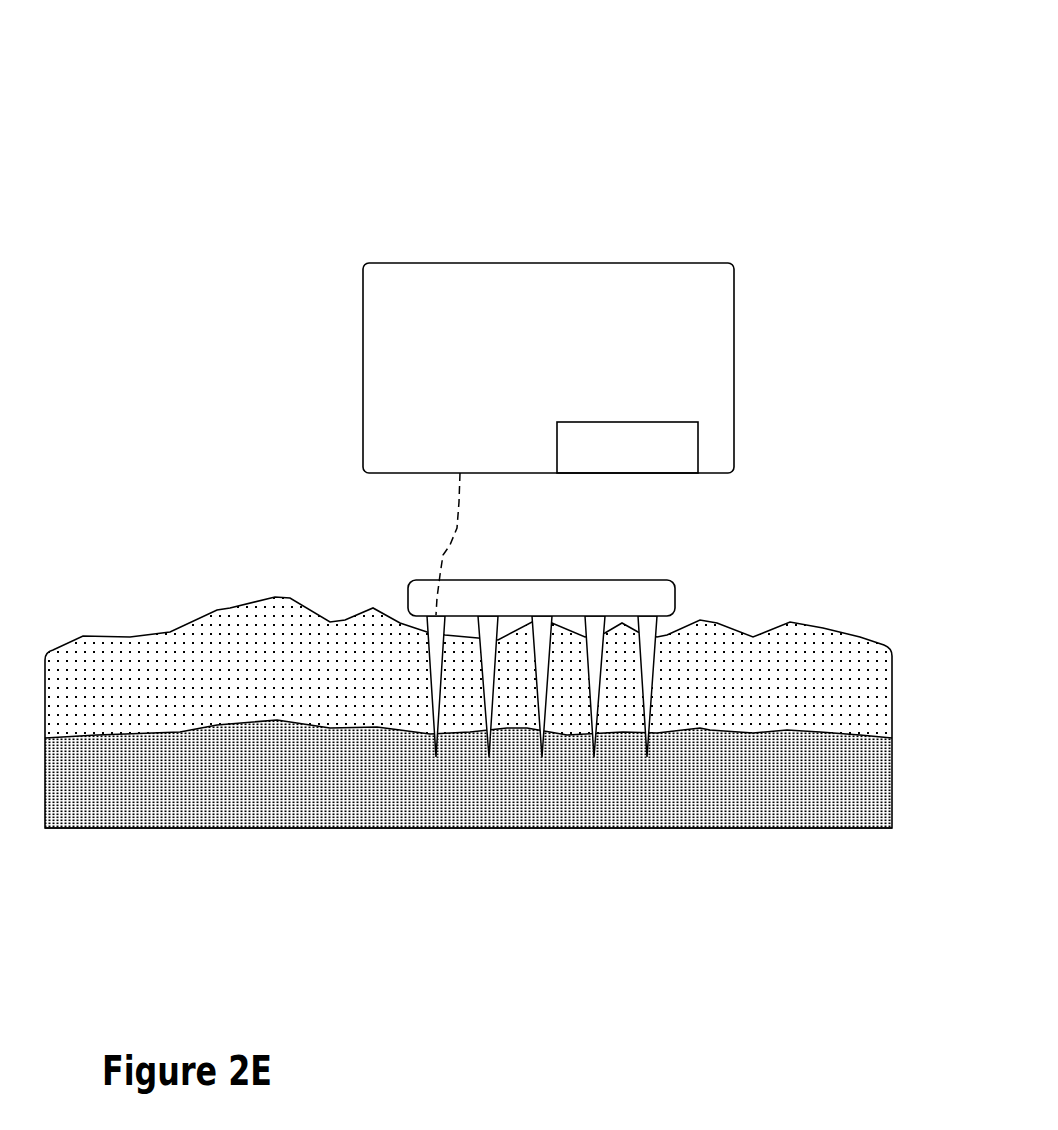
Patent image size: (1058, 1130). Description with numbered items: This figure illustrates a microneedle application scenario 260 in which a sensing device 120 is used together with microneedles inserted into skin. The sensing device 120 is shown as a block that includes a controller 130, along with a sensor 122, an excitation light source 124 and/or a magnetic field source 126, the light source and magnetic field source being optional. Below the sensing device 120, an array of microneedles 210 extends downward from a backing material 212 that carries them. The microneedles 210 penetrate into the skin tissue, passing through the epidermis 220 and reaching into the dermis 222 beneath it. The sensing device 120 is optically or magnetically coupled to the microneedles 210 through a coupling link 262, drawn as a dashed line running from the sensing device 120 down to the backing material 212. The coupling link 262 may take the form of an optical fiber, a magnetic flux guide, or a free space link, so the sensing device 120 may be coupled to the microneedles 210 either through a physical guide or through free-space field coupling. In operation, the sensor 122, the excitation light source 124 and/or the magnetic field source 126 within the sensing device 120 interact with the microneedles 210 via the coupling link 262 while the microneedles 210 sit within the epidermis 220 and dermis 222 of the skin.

The microneedle application scenario 260 is at (485, 112).
The sensing device 120 is at (623, 292).
The sensor 122 is at (482, 352).
The excitation light source 124 is at (550, 382).
The magnetic field source 126 is at (662, 409).
The controller 130 is at (687, 459).
The coupling link 262 is at (462, 502).
The backing material 212 is at (613, 580).
The microneedles 210 is at (427, 662).
The epidermis 220 is at (737, 628).
The dermis 222 is at (893, 797).